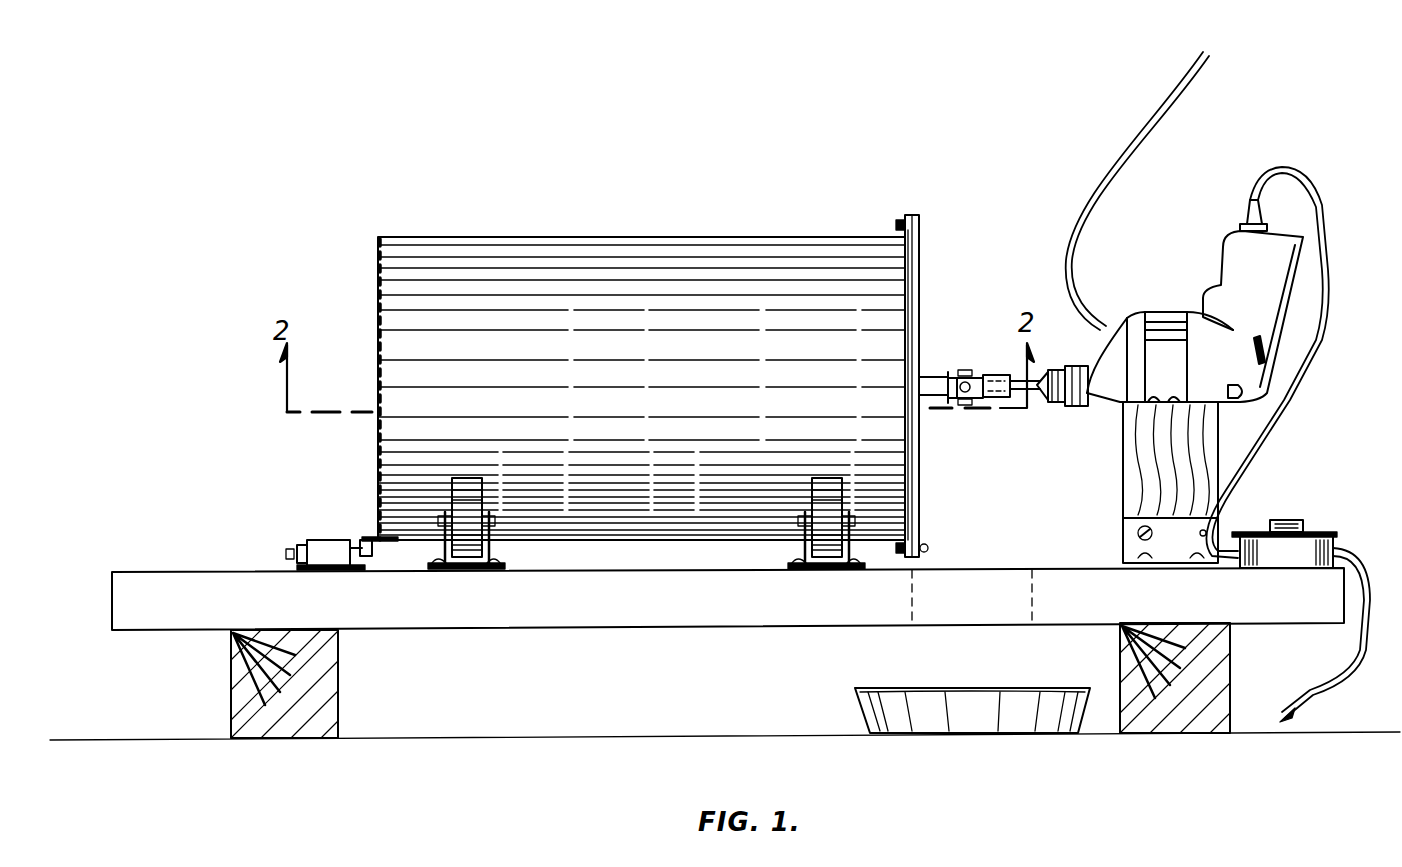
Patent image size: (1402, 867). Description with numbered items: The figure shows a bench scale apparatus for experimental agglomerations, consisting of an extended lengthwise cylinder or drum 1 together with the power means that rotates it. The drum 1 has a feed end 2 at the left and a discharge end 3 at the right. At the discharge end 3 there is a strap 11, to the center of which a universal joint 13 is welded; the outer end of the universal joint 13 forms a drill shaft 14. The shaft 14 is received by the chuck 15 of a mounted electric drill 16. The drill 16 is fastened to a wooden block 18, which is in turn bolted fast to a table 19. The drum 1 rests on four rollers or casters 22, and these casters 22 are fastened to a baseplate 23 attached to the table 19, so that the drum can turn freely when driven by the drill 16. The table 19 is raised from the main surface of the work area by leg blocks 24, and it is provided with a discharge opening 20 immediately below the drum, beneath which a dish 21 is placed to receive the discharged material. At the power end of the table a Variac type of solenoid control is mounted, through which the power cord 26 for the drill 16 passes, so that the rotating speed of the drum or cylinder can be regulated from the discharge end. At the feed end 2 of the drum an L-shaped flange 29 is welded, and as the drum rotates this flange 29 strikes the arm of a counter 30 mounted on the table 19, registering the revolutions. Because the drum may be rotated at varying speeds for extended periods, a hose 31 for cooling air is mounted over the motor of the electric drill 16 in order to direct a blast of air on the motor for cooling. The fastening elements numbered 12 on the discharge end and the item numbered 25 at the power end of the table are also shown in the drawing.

The drum 1 is at (490, 272).
The feed end 2 is at (376, 290).
The discharge end 3 is at (920, 260).
The strap 11 is at (910, 310).
The fastening bolts 12 is at (920, 225).
The universal joint 13 is at (985, 400).
The drill shaft 14 is at (1012, 375).
The chuck 15 is at (1052, 400).
The electric drill 16 is at (1112, 400).
The wooden block 18 is at (1124, 485).
The table 19 is at (140, 588).
The discharge opening 20 is at (1032, 610).
The dish 21 is at (1048, 705).
The rollers or casters 22 is at (465, 568).
The baseplate 23 is at (468, 570).
The leg blocks 24 is at (340, 710).
The electrical outlet 25 is at (1315, 532).
The power cord 26 is at (1330, 655).
The L-shaped flange 29 is at (380, 575).
The counter 30 is at (318, 538).
The hose 31 is at (1110, 178).